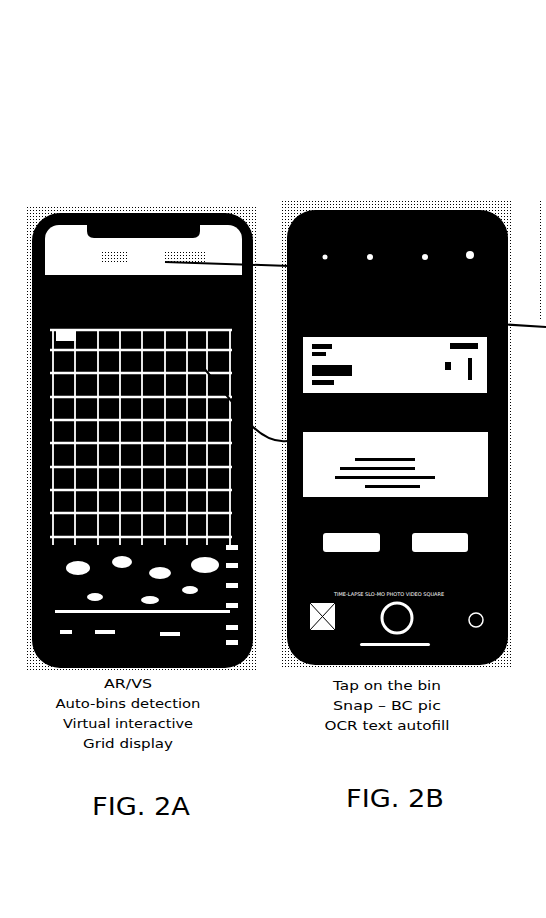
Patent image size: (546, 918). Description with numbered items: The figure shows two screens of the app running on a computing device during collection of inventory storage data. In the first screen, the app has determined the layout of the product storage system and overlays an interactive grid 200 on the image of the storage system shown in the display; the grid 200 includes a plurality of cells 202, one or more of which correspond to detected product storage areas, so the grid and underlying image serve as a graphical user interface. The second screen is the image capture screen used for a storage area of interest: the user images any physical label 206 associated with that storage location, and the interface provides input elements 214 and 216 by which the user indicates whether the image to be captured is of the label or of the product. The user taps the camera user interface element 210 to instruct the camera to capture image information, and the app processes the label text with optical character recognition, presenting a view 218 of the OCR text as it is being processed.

In FIG. 2A, the grid 200 is at (83, 277).
In FIG. 2A, the cells 202 is at (137, 272).
In FIG. 2A, the input element 214 is at (117, 255).
In FIG. 2A, the input element 216 is at (193, 250).
In FIG. 2B, the physical label 206 is at (398, 350).
In FIG. 2B, the view of the OCR text 218 is at (347, 478).
In FIG. 2B, the camera user interface element 210 is at (400, 622).